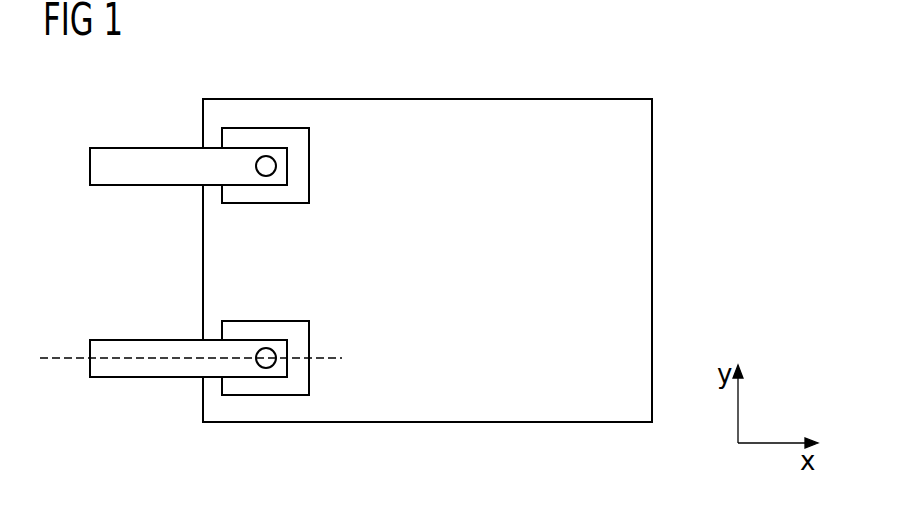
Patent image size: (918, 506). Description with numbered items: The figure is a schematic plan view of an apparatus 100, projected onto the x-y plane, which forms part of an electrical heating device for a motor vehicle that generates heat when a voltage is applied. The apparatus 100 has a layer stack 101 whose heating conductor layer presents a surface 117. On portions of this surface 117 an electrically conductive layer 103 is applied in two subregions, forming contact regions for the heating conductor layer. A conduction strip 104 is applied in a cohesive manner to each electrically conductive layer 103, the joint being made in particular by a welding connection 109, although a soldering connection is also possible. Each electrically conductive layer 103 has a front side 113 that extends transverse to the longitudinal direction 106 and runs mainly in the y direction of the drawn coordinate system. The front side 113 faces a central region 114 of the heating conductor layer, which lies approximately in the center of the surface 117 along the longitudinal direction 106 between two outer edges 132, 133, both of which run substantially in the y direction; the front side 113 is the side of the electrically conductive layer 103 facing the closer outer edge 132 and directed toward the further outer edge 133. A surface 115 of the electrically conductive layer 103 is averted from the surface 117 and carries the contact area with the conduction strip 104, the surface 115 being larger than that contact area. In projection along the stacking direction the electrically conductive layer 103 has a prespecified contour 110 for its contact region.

The apparatus 100 is at (655, 88).
The layer stack 101 is at (635, 295).
The electrically conductive layer 103 is at (250, 137).
The conduction strip 104 is at (118, 163).
The longitudinal direction 106 is at (60, 357).
The welding connection 109 is at (270, 150).
The prespecified contour 110 is at (312, 332).
The front side 113 is at (312, 373).
The central region 114 is at (440, 97).
The surface of the electrically conductive layer 115 is at (228, 197).
The surface of the heating conductor layer 117 is at (570, 113).
The outer edge 132 is at (203, 260).
The further outer edge 133 is at (653, 217).